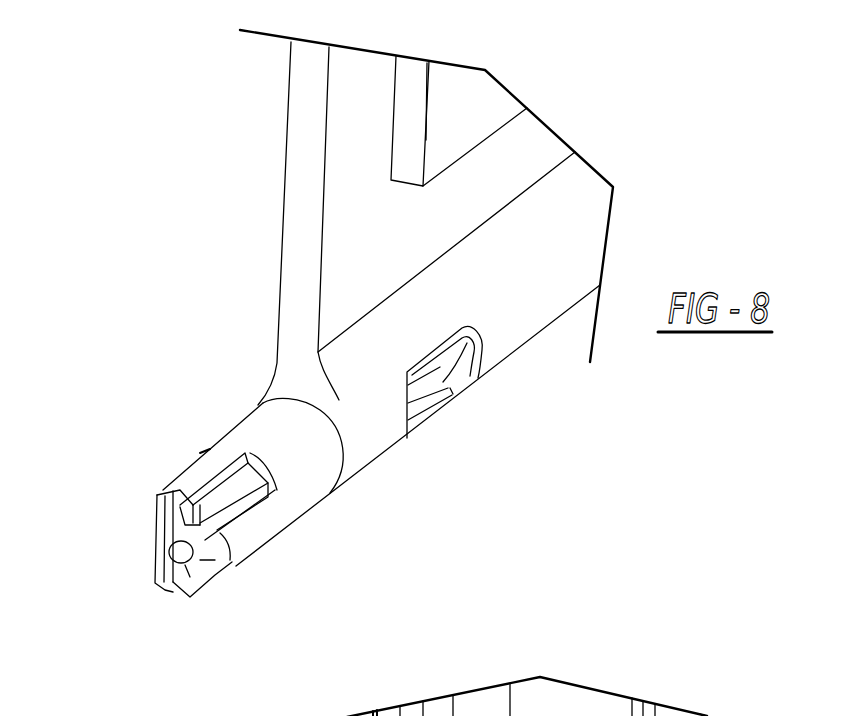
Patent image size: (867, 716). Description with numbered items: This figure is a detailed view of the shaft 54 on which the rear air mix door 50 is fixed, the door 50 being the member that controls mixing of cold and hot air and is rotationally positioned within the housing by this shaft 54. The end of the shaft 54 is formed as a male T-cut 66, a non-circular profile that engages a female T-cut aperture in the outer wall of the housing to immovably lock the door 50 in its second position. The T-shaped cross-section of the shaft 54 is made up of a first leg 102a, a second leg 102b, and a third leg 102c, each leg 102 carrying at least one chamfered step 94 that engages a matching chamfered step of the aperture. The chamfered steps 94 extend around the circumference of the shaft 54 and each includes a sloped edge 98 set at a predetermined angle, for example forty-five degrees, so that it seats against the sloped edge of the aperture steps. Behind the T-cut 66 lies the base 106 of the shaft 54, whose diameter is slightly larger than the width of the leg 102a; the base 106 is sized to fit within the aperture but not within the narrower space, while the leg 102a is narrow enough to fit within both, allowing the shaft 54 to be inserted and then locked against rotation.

The rear air mix door 50 is at (365, 92).
The shaft 54 is at (378, 440).
The male T-cut 66 is at (238, 585).
The chamfered step 94 is at (163, 503).
The sloped edge 98 is at (172, 496).
The leg 102 is at (173, 555).
The first leg 102a is at (215, 562).
The second leg 102b is at (190, 578).
The third leg 102c is at (179, 508).
The base 106 is at (710, 715).